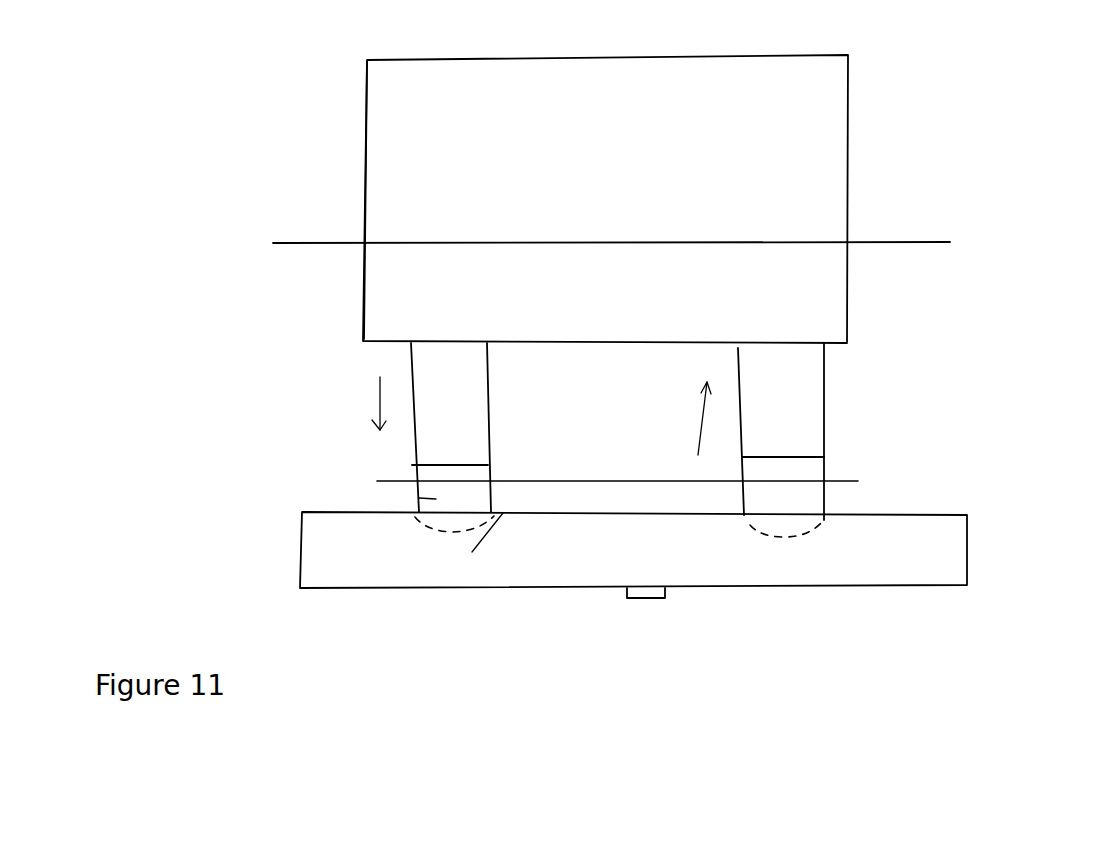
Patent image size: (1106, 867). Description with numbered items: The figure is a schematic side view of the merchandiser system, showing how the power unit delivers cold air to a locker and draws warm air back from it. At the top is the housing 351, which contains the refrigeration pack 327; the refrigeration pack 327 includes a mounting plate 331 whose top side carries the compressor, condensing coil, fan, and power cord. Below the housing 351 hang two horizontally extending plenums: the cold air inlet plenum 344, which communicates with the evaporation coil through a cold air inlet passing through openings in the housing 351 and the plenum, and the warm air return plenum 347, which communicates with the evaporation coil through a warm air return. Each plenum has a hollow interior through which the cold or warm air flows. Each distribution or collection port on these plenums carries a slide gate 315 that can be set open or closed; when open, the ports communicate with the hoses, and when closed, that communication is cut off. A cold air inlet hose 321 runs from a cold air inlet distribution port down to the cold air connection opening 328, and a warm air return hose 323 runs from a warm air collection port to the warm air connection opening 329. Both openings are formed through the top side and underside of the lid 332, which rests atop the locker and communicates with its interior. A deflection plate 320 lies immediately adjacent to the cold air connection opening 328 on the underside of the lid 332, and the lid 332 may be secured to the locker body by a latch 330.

The refrigeration pack 327 is at (870, 115).
The housing 351 is at (367, 133).
The mounting plate 331 is at (965, 241).
The cold air inlet plenum 344 is at (472, 410).
The warm air return plenum 347 is at (808, 397).
The slide gate 315 is at (847, 477).
The cold air inlet hose 321 is at (435, 500).
The warm air return hose 323 is at (812, 505).
The lid 332 is at (948, 557).
The cold air connection opening 328 is at (440, 532).
The warm air connection opening 329 is at (799, 535).
The deflection plate 320 is at (479, 539).
The latch 330 is at (655, 598).